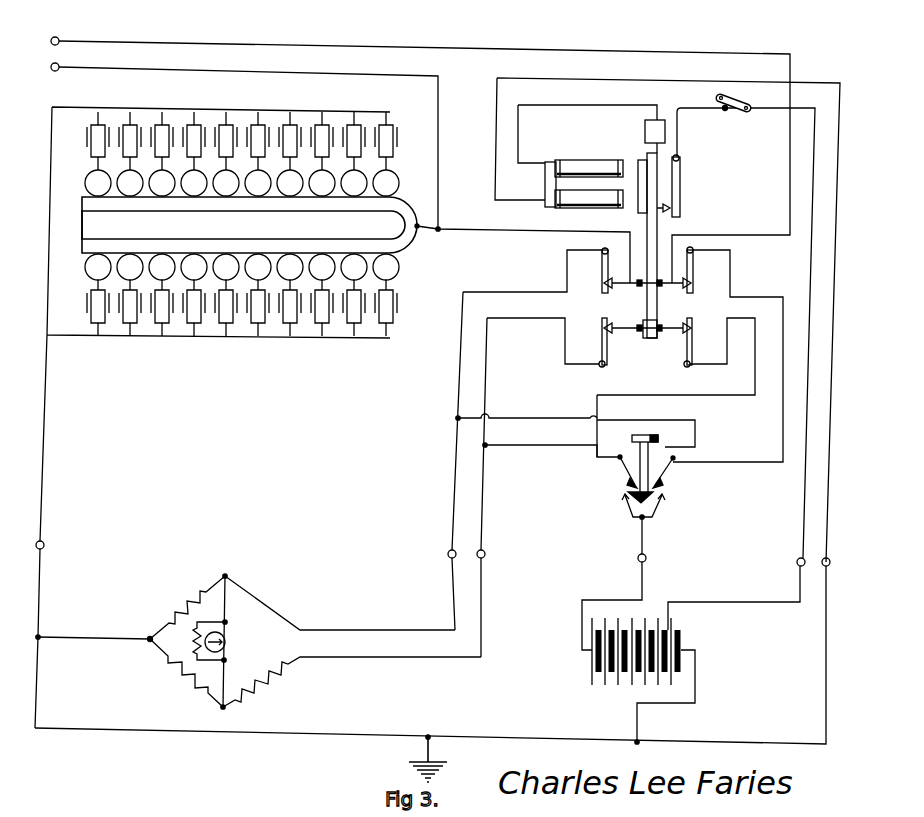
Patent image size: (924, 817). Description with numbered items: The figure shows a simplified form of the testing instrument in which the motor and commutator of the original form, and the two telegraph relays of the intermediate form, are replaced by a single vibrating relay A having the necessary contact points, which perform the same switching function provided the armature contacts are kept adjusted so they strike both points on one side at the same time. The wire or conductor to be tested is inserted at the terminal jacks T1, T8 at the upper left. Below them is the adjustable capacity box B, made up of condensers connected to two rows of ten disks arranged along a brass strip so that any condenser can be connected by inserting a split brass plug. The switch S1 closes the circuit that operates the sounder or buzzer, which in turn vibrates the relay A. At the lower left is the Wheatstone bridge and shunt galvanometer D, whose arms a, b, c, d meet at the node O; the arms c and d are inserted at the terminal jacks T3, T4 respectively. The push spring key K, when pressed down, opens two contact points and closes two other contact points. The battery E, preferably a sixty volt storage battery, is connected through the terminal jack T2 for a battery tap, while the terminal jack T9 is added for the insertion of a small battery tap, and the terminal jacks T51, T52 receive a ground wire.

The terminal jack T1 is at (49, 30).
The terminal jack T8 is at (244, 138).
The adjustable capacity box B is at (338, 222).
The vibrating relay A is at (651, 320).
The switch S1 is at (737, 114).
The terminal jack T9 is at (744, 586).
The terminal jack T52 is at (443, 643).
The terminal jack T51 is at (51, 531).
The bridge node O is at (148, 637).
The Wheatstone bridge and shunt galvanometer D is at (315, 641).
The bridge arm a is at (187, 607).
The bridge arm b is at (186, 673).
The Wheatstone bridge arm c is at (340, 603).
The Wheatstone bridge arm d is at (352, 682).
The terminal jack T3 is at (514, 461).
The terminal jack T4 is at (548, 487).
The push spring key K is at (650, 474).
The terminal jack T2 is at (624, 597).
The battery E is at (663, 681).